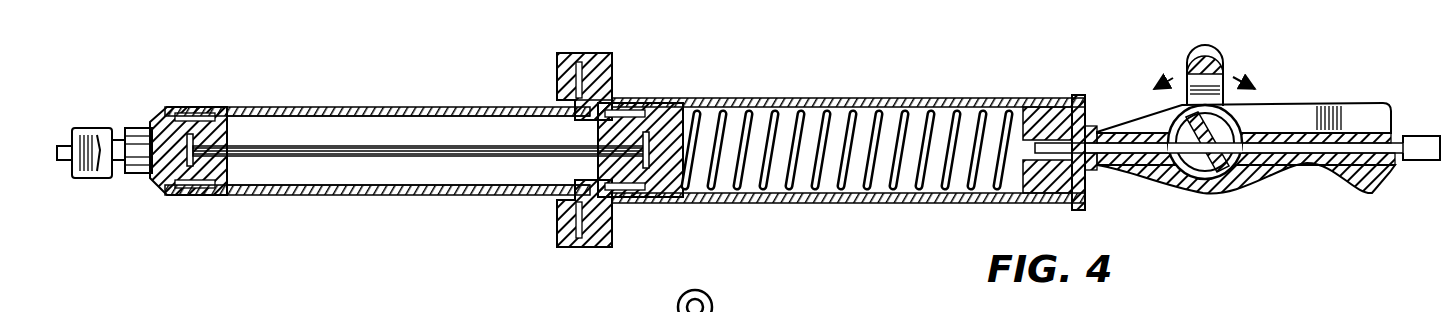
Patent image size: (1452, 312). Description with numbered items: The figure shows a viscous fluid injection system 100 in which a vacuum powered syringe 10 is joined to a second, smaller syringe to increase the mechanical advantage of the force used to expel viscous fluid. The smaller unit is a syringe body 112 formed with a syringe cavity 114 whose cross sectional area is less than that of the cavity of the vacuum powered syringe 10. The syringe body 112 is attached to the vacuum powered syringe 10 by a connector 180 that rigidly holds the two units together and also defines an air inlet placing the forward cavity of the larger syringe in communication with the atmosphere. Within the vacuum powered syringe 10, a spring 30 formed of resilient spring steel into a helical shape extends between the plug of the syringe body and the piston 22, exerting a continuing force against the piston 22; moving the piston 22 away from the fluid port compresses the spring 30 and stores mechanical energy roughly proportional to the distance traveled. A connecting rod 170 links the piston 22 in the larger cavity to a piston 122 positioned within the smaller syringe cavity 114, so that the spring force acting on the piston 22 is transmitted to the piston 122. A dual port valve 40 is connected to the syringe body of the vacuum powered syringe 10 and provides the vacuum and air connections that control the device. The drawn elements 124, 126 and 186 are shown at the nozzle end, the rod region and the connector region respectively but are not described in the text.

The vacuum powered syringe 10 is at (947, 73).
The piston 22 is at (637, 186).
The spring 30 is at (928, 174).
The dual port valve 40 is at (1280, 84).
The viscous fluid injection system 100 is at (485, 55).
The syringe body 112 is at (368, 115).
The syringe cavity 114 is at (270, 126).
The piston 122 is at (222, 172).
The nozzle fitting 124 is at (150, 168).
The plunger rod 126 is at (363, 167).
The connecting rod 170 is at (452, 157).
The connector 180 is at (616, 61).
The flange shoulder 186 is at (546, 99).